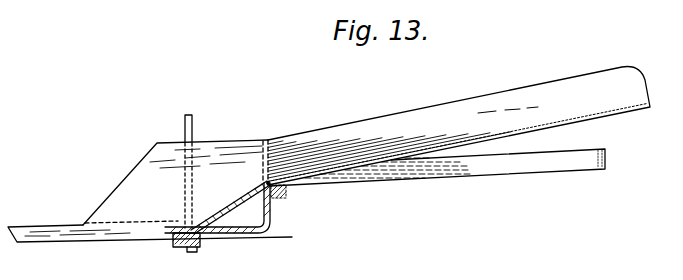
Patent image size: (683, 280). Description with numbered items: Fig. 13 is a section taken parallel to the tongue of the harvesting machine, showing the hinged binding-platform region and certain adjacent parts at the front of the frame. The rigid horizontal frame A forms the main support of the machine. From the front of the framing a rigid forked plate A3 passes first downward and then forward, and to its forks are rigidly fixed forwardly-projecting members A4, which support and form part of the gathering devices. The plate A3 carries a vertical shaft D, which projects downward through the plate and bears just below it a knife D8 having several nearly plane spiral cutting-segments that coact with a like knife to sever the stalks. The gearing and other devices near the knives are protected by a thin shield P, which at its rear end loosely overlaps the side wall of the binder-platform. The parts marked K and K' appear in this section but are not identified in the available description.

The spring arm K' is at (459, 126).
The rigid horizontal frame A is at (565, 170).
The thin shield P is at (157, 198).
The vertical shaft D is at (193, 121).
The knife D8 is at (162, 241).
The rigid forked plate A3 is at (253, 232).
The key strip K is at (230, 207).
The forwardly-projecting member A4 is at (40, 240).